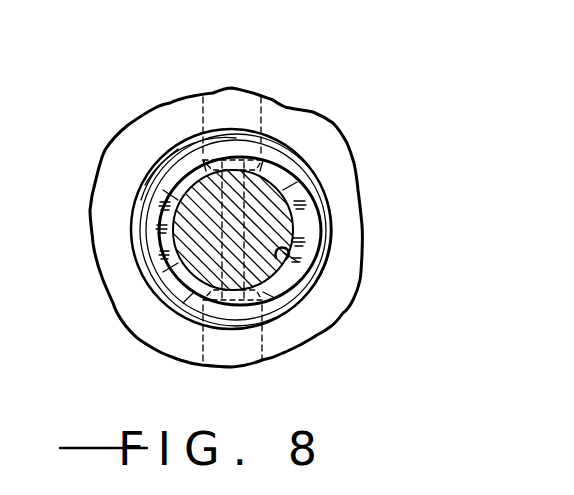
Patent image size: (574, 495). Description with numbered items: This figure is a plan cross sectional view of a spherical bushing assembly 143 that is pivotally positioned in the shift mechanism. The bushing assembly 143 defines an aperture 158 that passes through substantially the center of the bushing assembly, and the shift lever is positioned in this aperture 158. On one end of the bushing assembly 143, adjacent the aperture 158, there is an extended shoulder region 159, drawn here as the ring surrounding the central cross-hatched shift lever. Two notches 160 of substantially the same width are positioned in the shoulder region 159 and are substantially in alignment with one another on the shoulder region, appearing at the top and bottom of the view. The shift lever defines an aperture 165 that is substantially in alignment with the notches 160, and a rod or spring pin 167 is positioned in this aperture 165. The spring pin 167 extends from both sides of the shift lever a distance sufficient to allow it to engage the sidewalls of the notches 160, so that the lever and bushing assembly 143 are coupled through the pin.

The bushing assembly 143 is at (317, 280).
The aperture 158 is at (290, 254).
The extended shoulder region 159 is at (297, 205).
The notches 160 is at (275, 166).
The aperture 165 is at (175, 143).
The spring pin 167 is at (220, 162).